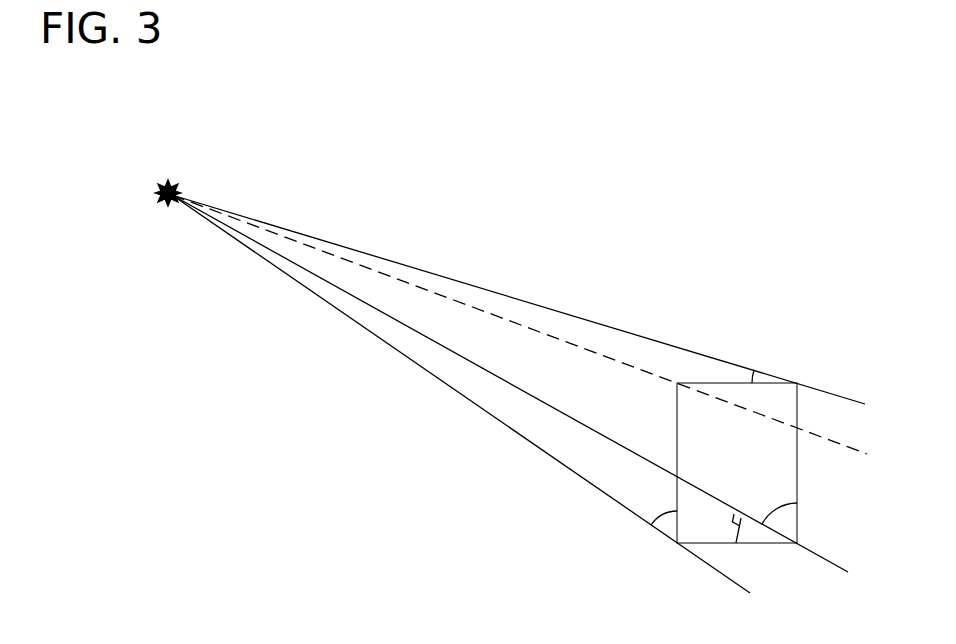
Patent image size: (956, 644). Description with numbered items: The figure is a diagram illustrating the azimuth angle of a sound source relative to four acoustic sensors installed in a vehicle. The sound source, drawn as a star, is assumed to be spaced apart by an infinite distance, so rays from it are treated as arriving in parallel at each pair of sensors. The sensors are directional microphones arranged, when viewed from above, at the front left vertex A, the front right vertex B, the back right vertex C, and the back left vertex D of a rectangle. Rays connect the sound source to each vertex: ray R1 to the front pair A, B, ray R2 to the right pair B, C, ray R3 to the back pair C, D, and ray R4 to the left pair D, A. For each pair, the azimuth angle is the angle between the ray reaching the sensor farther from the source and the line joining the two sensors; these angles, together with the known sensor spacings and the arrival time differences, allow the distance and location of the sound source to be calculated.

The front sensor pair A-B R1 is at (697, 383).
The right sensor pair B-C R2 is at (797, 455).
The back sensor pair C-D R3 is at (755, 543).
The left sensor pair D-A R4 is at (677, 435).
The front left acoustic sensor A is at (673, 365).
The front right acoustic sensor B is at (806, 367).
The back right acoustic sensor C is at (795, 560).
The back left acoustic sensor D is at (665, 557).